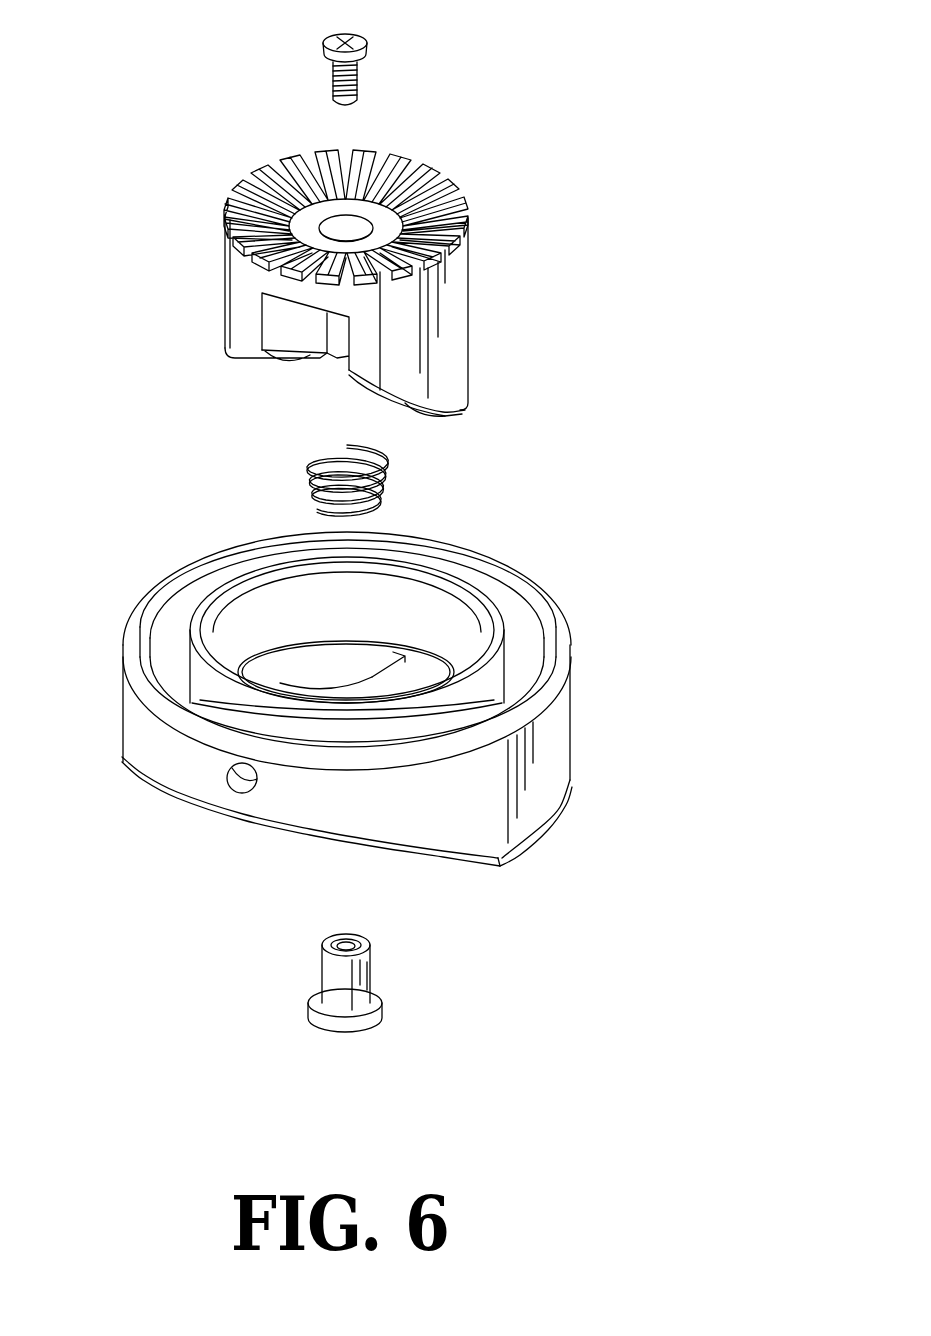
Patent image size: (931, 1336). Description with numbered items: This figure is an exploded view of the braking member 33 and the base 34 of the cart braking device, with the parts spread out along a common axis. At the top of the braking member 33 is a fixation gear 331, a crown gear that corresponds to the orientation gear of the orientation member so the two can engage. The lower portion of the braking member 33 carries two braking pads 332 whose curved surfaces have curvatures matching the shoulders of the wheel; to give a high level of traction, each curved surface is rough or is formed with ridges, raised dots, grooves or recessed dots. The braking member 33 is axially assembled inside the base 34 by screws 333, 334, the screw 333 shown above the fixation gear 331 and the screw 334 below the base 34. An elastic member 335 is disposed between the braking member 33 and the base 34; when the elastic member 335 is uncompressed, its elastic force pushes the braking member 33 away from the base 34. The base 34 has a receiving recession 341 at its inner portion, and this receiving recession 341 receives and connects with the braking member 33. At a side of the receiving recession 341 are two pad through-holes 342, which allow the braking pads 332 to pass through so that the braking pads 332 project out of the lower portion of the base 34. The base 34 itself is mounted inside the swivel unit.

The braking member 33 is at (407, 290).
The fixation gear 331 is at (442, 187).
The braking pads 332 is at (265, 357).
The screw 333 is at (362, 41).
The screw 334 is at (380, 1001).
The elastic member 335 is at (303, 468).
The base 34 is at (415, 652).
The receiving recession 341 is at (390, 653).
The pad through-holes 342 is at (292, 675).